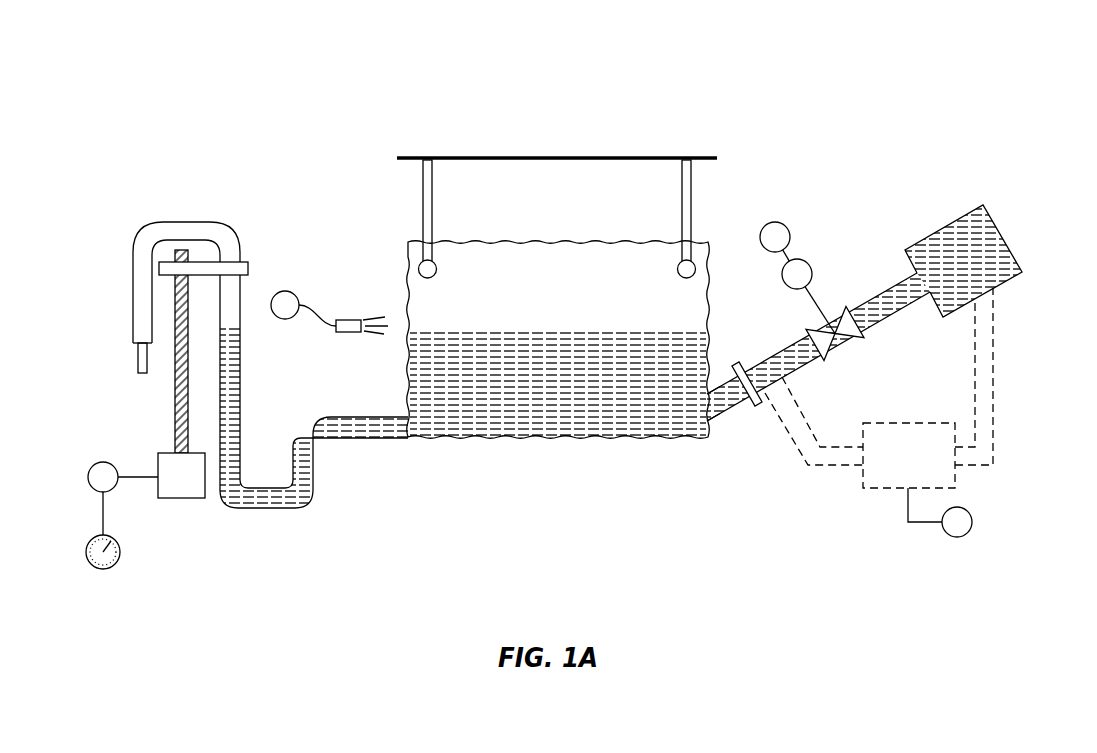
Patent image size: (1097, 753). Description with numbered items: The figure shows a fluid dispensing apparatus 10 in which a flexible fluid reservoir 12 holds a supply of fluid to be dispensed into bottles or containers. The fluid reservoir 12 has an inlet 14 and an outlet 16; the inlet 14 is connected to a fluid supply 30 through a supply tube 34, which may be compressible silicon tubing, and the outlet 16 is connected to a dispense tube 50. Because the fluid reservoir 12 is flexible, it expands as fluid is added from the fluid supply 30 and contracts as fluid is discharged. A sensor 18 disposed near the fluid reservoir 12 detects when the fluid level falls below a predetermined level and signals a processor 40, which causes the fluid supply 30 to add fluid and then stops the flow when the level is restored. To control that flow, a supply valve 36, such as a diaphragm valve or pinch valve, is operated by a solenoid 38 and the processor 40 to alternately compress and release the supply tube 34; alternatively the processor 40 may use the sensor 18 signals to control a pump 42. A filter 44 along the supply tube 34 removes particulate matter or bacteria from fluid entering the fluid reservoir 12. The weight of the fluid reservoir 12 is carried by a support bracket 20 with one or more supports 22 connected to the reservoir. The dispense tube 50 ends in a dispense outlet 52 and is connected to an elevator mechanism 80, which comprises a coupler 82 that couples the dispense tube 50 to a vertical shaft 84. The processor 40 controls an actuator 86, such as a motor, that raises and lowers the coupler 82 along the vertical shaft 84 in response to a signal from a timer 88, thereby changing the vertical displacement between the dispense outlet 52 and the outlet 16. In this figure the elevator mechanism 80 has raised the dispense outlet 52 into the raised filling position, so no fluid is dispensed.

The fluid dispensing apparatus 10 is at (678, 54).
The fluid reservoir 12 is at (527, 440).
The inlet 14 is at (714, 420).
The outlet 16 is at (405, 422).
The sensor 18 is at (352, 318).
The support bracket 20 is at (410, 157).
The supports 22 is at (424, 203).
The fluid supply 30 is at (990, 214).
The supply tube 34 is at (885, 318).
The supply valve 36 is at (850, 305).
The solenoid 38 is at (808, 262).
The processor 40 is at (112, 490).
The pump 42 is at (895, 423).
The filter 44 is at (736, 368).
The dispense tube 50 is at (240, 400).
The dispense outlet 52 is at (137, 355).
The elevator mechanism 80 is at (203, 148).
The coupler 82 is at (249, 265).
The vertical shaft 84 is at (175, 405).
The actuator 86 is at (190, 498).
The timer 88 is at (114, 563).